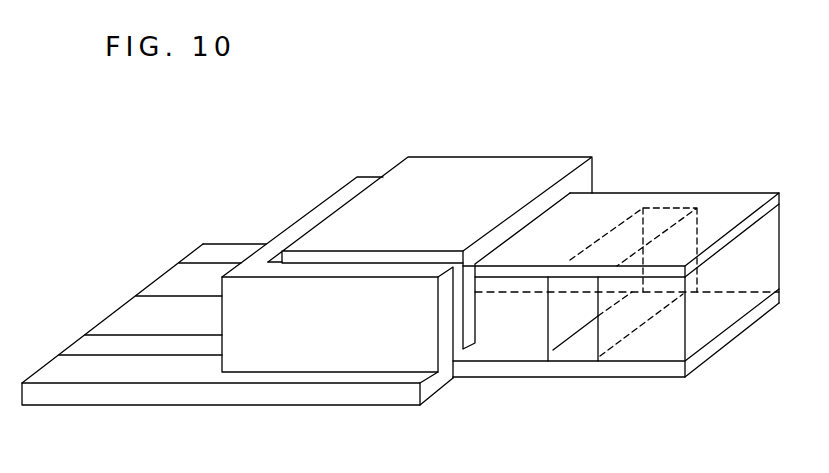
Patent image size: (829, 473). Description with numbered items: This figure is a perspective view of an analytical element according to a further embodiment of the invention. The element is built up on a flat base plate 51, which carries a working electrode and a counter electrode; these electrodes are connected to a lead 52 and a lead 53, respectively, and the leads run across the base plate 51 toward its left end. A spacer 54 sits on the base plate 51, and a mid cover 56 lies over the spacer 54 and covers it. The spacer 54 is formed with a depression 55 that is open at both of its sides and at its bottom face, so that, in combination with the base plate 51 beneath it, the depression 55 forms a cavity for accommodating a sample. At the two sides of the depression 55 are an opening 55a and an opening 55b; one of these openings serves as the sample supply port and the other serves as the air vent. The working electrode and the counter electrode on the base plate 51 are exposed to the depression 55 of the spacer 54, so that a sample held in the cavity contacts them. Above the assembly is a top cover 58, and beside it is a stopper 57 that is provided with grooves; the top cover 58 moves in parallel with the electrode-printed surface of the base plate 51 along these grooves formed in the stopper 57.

The base plate 51 is at (84, 400).
The lead 52 is at (97, 347).
The lead 53 is at (182, 283).
The spacer 54 is at (759, 275).
The depression 55 is at (587, 310).
The opening 55a is at (553, 349).
The opening 55b is at (662, 222).
The mid cover 56 is at (765, 215).
The stopper 57 is at (340, 198).
The top cover 58 is at (471, 176).